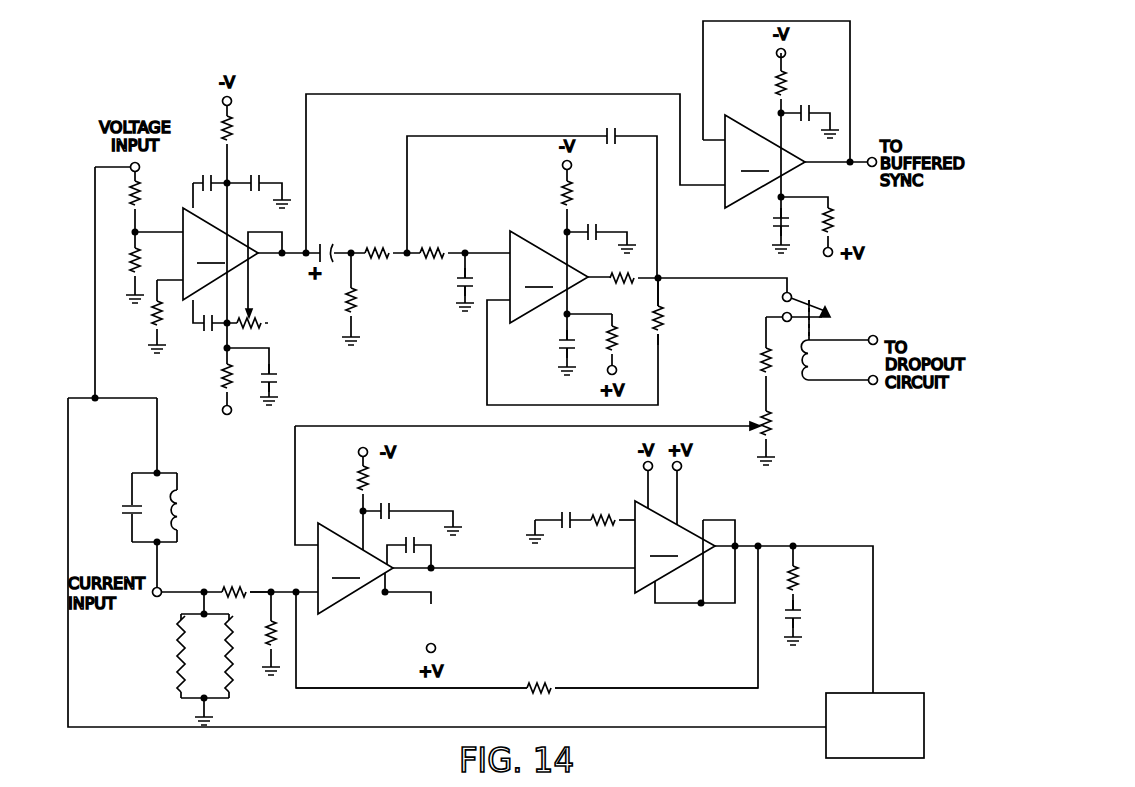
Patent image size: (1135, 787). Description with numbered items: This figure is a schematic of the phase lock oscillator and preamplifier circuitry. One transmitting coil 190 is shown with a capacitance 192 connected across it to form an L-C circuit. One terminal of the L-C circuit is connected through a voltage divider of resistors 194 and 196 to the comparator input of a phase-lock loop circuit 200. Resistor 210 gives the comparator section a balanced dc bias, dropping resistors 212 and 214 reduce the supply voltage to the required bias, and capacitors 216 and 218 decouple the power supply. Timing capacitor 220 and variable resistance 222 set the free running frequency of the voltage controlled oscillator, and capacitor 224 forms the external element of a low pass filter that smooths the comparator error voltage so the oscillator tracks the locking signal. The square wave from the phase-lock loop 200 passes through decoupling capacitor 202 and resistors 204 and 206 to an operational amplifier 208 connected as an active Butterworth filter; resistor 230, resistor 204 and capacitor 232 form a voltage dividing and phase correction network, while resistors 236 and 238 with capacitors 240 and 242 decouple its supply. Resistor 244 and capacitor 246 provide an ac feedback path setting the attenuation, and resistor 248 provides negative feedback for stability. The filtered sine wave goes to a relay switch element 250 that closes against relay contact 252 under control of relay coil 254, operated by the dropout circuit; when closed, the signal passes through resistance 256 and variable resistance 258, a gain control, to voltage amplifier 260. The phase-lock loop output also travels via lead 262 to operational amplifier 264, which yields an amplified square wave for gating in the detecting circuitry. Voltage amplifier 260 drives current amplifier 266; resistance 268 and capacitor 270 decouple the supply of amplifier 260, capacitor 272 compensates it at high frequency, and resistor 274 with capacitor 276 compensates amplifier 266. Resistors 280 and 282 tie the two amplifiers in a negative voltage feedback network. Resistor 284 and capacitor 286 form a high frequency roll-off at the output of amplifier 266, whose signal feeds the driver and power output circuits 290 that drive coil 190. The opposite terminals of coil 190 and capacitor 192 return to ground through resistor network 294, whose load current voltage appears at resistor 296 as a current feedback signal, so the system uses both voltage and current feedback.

The transmitting coil 190 is at (184, 509).
The capacitance 192 is at (126, 500).
The resistor 194 is at (140, 192).
The resistor 196 is at (133, 282).
The phase-lock loop circuit 200 is at (220, 254).
The decoupling capacitor 202 is at (322, 245).
The resistor 204 is at (379, 258).
The resistor 206 is at (438, 249).
The operational amplifier 208 is at (549, 277).
The resistor 210 is at (154, 327).
The dropping resistor 212 is at (230, 128).
The dropping resistor 214 is at (221, 380).
The capacitor 216 is at (258, 176).
The capacitor 218 is at (280, 380).
The timing capacitor 220 is at (204, 175).
The variable resistance 222 is at (266, 324).
The capacitor 224 is at (206, 329).
The resistor 230 is at (358, 308).
The capacitor 232 is at (461, 286).
The resistor 236 is at (564, 204).
The resistor 238 is at (618, 340).
The capacitor 240 is at (598, 229).
The capacitor 242 is at (560, 347).
The resistor 244 is at (632, 282).
The capacitor 246 is at (604, 132).
The resistor 248 is at (668, 324).
The relay switch element 250 is at (815, 300).
The relay contact 252 is at (834, 320).
The relay coil 254 is at (806, 372).
The resistance 256 is at (761, 357).
The variable resistance 258 is at (776, 430).
The voltage amplifier 260 is at (355, 568).
The lead 262 is at (494, 94).
The operational amplifier 264 is at (782, 153).
The current amplifier 266 is at (675, 547).
The resistance 268 is at (358, 482).
The capacitor 270 is at (394, 512).
The capacitor 272 is at (434, 543).
The resistor 274 is at (604, 516).
The capacitor 276 is at (562, 516).
The resistor 280 is at (552, 686).
The resistor 282 is at (298, 642).
The resistor 284 is at (799, 580).
The capacitor 286 is at (799, 611).
The driver and power output circuits 290 is at (838, 693).
The resistor network 294 is at (178, 660).
The resistor 296 is at (235, 589).